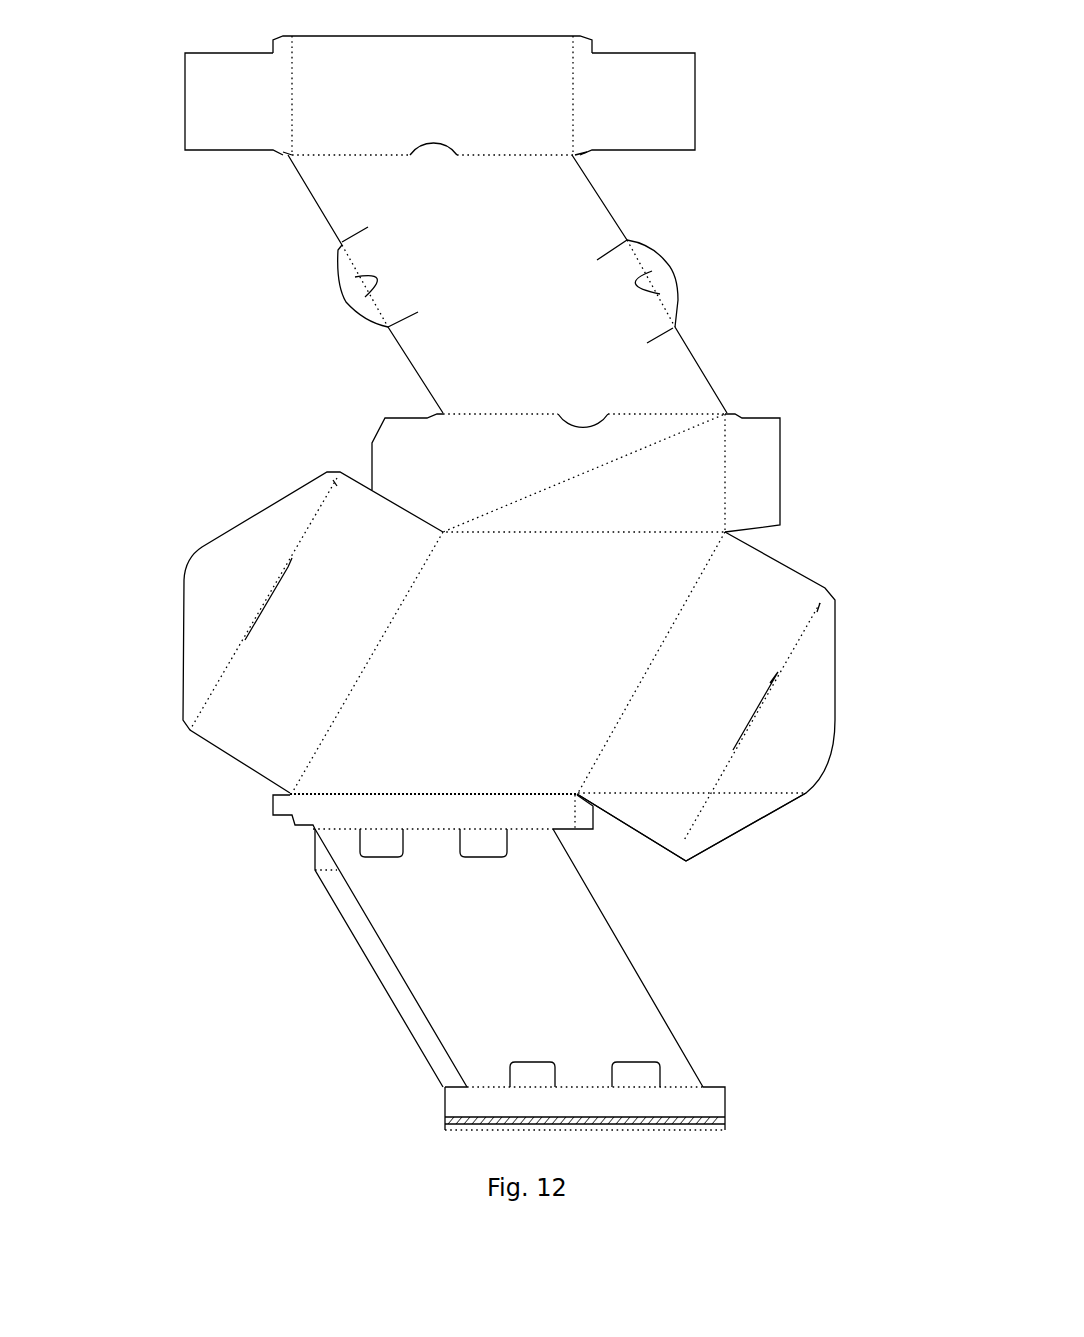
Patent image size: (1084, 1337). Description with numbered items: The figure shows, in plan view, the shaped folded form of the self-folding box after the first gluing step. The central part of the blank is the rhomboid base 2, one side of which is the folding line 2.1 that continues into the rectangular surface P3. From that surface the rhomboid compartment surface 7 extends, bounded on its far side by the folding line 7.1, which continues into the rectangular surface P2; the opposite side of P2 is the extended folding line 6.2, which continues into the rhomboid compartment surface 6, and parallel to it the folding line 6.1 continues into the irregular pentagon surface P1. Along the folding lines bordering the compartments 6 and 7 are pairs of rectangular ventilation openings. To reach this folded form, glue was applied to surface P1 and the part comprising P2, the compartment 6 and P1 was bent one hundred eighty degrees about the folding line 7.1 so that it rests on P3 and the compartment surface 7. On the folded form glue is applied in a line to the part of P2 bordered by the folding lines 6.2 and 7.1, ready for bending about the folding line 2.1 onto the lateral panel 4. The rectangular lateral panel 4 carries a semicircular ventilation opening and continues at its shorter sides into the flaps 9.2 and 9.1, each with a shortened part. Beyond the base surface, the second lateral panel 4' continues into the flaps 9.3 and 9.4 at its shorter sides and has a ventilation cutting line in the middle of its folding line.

The lateral panel 4' is at (555, 95).
The flap 9.4 is at (237, 100).
The flap 9.3 is at (650, 100).
The lateral panel 4 is at (695, 473).
The flap 9.1 is at (415, 449).
The flap 9.2 is at (768, 472).
The base 2 is at (362, 740).
The folding line 2.1 is at (557, 792).
The folding line 6.1 is at (548, 830).
The compartment 6 is at (490, 940).
The compartment 7 is at (413, 1020).
The folding line 6.2 is at (680, 1087).
The folding line 7.1 is at (683, 1128).